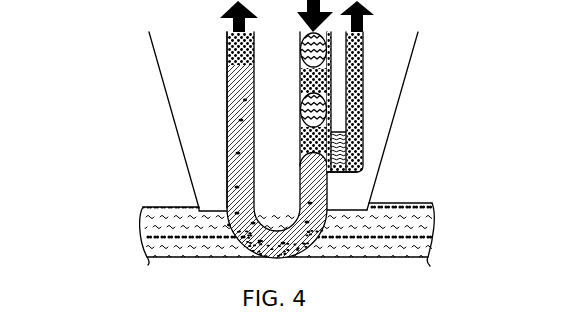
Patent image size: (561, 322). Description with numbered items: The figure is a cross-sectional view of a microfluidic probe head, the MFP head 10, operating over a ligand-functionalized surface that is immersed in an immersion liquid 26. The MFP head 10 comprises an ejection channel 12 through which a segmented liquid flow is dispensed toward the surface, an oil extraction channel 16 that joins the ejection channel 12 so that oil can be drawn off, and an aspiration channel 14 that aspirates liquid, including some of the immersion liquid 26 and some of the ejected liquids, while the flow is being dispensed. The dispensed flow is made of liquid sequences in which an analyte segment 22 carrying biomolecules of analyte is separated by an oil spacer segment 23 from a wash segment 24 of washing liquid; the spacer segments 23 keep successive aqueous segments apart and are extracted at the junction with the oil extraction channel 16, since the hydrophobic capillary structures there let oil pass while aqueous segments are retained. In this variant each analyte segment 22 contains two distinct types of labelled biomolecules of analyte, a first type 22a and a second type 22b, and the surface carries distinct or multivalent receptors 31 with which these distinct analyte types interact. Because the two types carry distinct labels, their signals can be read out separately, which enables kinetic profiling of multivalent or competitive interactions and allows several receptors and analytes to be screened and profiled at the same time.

The MFP head 10 is at (158, 99).
The ejection channel 12 is at (330, 183).
The aspiration channel 14 is at (279, 130).
The oil extraction channel 16 is at (363, 50).
The analyte segment 22 is at (330, 193).
The first type of labelled biomolecules of analyte 22a is at (338, 214).
The second type of labelled biomolecules of analyte 22b is at (357, 236).
The spacer segment 23 is at (300, 90).
The wash segment 24 is at (300, 62).
The immersion liquid 26 is at (227, 80).
The multivalent receptors 31 is at (229, 259).